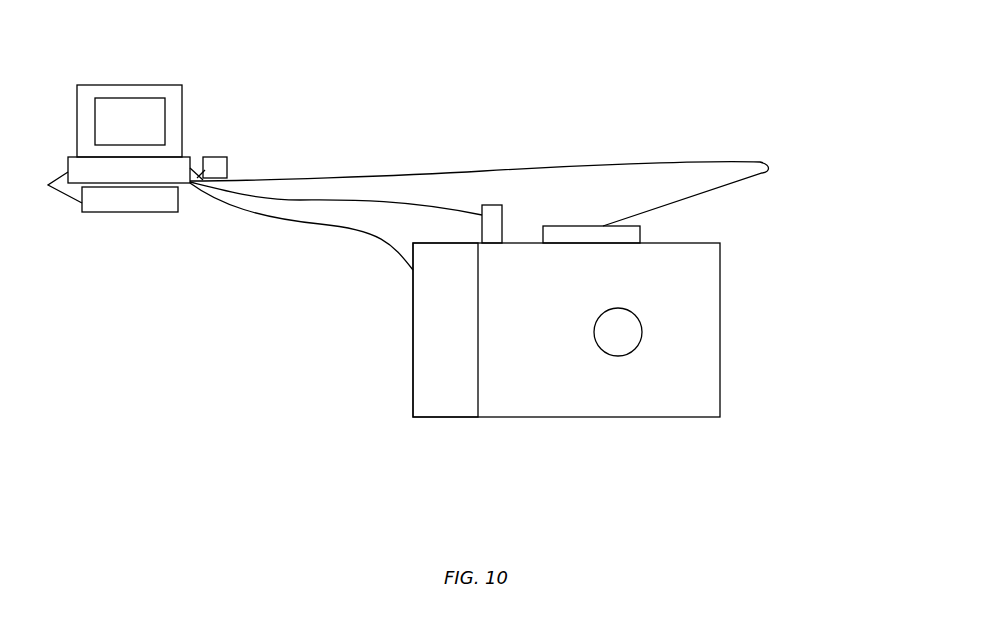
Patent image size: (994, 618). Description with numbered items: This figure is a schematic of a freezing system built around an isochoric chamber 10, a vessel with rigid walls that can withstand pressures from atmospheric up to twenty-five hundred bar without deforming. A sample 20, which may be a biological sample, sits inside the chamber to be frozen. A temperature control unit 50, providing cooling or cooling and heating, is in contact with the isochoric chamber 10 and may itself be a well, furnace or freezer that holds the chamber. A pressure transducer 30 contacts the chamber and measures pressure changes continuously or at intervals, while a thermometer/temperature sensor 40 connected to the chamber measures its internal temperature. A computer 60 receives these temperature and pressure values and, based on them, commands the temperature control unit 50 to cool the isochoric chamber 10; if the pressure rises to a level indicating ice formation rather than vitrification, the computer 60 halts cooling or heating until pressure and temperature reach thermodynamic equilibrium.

The isochoric chamber 10 is at (580, 418).
The sample 20 is at (642, 332).
The pressure transducer 30 is at (642, 232).
The thermometer/temperature sensor 40 is at (491, 205).
The temperature control unit 50 is at (432, 418).
The computer 60 is at (205, 91).